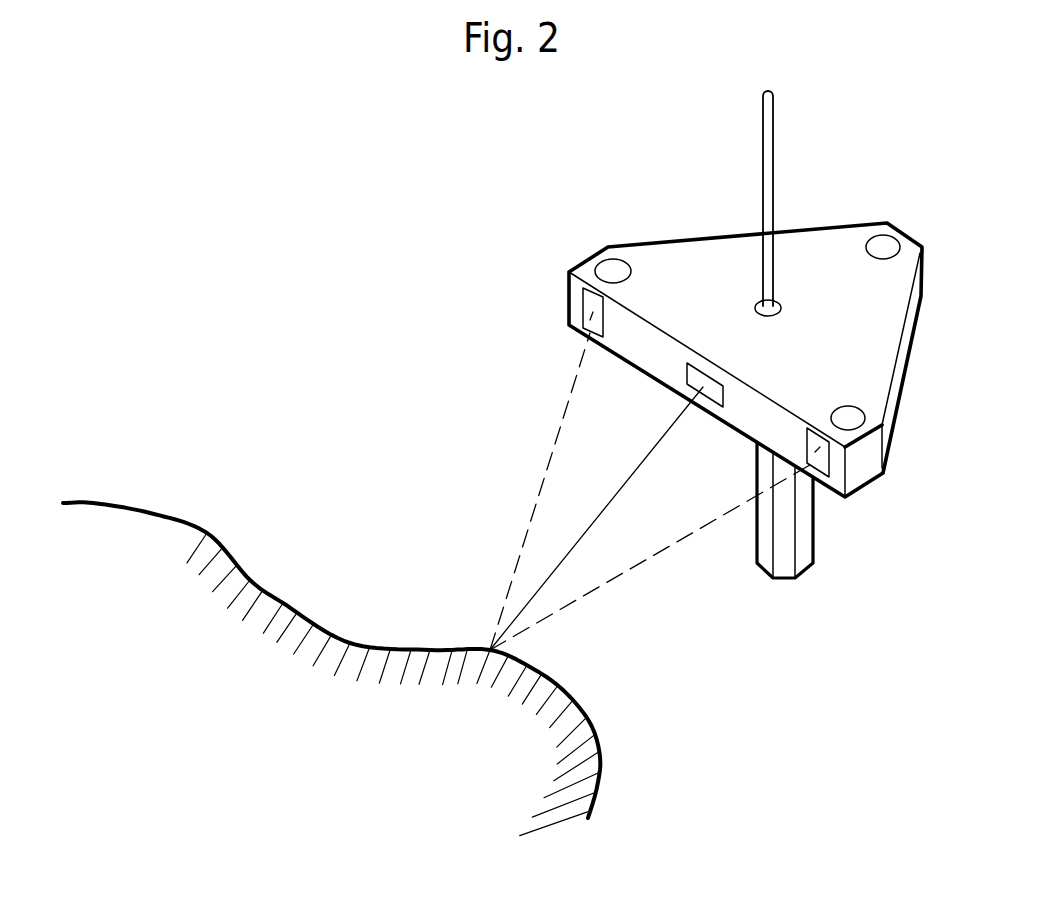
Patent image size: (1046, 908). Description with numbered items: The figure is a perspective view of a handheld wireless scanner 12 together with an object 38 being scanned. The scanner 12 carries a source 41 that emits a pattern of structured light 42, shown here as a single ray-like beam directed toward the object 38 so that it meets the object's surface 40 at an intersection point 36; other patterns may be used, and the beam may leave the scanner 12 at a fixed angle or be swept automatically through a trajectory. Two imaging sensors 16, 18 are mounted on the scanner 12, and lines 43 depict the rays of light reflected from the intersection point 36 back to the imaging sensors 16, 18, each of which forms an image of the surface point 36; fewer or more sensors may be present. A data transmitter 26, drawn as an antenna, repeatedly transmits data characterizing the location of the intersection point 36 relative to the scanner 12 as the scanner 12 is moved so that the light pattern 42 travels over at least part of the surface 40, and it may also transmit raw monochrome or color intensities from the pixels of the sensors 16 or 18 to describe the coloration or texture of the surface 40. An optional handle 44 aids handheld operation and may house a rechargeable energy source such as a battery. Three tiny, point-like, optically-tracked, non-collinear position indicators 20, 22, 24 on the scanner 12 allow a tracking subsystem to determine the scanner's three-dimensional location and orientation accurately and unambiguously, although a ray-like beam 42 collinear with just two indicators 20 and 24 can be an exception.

The scanner 12 is at (682, 228).
The imaging sensor 16 is at (807, 443).
The imaging sensor 18 is at (583, 308).
The position indicator 20 is at (830, 413).
The position indicator 22 is at (587, 262).
The position indicator 24 is at (883, 238).
The data transmitter 26 is at (773, 145).
The intersection point 36 is at (485, 644).
The object 38 is at (213, 526).
The surface 40 is at (277, 600).
The source 41 is at (688, 372).
The pattern of structured light 42 is at (627, 483).
The lines 43 is at (550, 460).
The handle 44 is at (815, 545).